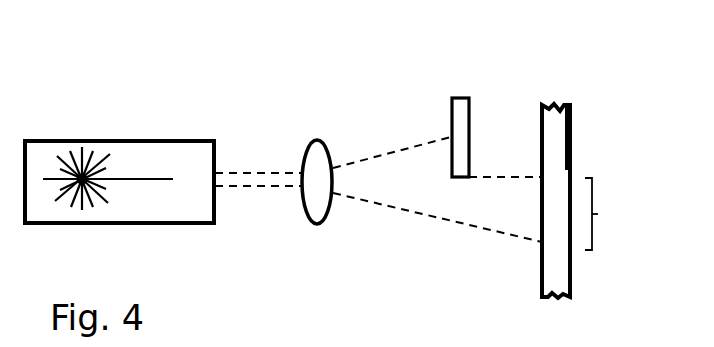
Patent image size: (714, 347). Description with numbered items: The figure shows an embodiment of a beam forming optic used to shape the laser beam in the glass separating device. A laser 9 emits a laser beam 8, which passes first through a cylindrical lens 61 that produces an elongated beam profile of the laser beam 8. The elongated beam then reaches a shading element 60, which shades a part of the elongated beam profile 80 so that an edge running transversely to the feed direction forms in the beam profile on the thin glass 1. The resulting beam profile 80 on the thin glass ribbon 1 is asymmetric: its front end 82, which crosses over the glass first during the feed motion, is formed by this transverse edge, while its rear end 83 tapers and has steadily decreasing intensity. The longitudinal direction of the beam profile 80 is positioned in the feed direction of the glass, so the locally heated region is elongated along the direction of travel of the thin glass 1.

The thin glass ribbon 1 is at (557, 132).
The laser beam 8 is at (248, 175).
The laser 9 is at (117, 139).
The shading element 60 is at (453, 98).
The cylindrical lens 61 is at (313, 140).
The beam profile 80 is at (611, 214).
The front end of the beam profile 82 is at (540, 177).
The rear end of the beam profile 83 is at (541, 242).